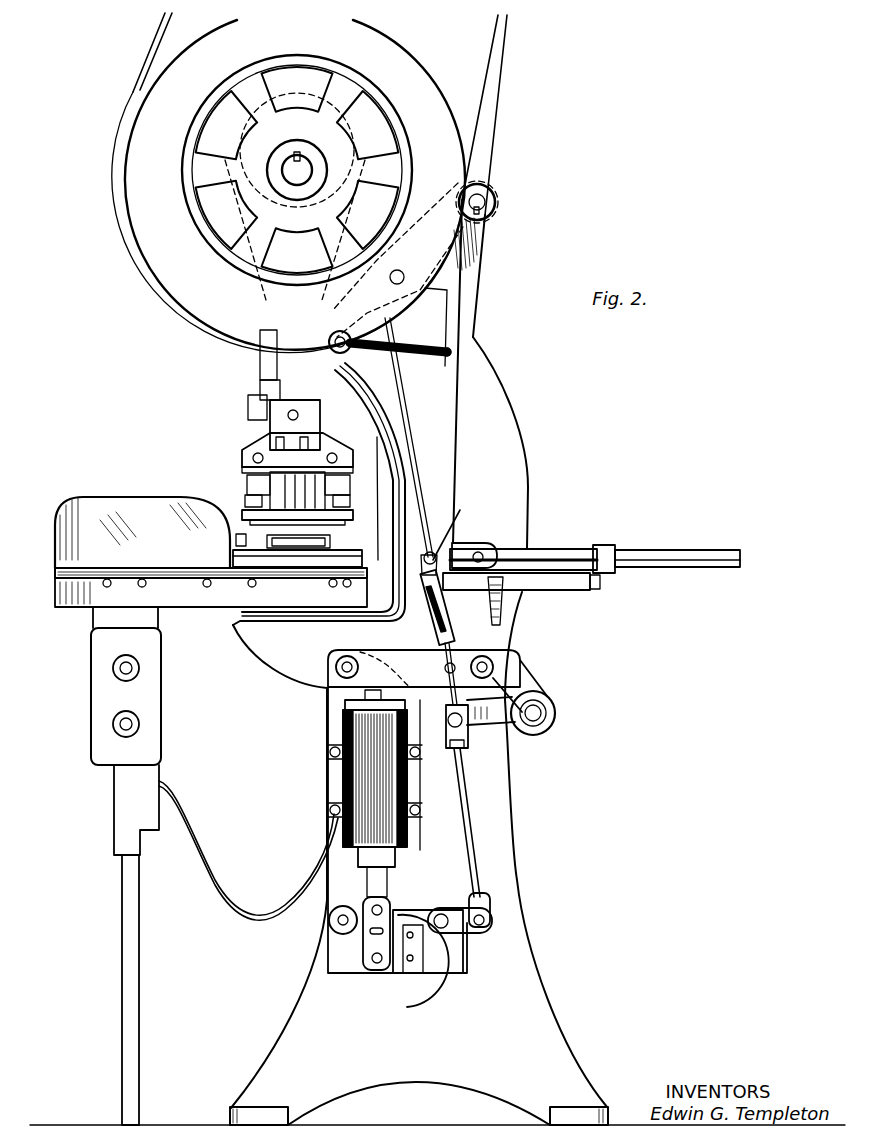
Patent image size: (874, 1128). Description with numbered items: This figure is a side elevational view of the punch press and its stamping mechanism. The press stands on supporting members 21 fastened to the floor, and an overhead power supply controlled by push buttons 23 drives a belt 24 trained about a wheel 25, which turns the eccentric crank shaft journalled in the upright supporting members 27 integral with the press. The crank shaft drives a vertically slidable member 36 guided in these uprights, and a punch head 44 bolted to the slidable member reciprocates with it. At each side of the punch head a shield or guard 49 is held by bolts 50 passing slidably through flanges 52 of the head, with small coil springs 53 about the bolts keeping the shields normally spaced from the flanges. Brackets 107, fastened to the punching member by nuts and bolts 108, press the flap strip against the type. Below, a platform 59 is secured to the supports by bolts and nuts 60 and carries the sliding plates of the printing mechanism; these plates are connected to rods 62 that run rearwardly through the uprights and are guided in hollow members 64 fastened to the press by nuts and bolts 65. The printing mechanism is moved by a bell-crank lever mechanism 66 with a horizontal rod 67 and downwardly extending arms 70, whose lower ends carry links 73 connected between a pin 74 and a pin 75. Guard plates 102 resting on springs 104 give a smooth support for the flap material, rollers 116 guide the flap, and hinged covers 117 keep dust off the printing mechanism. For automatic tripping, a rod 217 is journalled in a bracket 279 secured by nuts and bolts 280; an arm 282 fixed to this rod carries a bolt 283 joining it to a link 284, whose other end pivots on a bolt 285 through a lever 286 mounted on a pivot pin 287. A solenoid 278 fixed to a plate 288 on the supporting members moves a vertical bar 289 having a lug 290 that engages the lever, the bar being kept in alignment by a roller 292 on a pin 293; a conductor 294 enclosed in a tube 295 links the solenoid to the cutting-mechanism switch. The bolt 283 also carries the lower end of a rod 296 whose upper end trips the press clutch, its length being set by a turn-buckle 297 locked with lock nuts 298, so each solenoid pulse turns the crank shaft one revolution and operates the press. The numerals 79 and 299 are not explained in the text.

The supporting members 21 is at (510, 800).
The push buttons 23 is at (112, 722).
The belt 24 is at (494, 76).
The wheel 25 is at (420, 62).
The upright supporting members 27 is at (490, 370).
The vertically slidable member 36 is at (258, 372).
The punch head 44 is at (243, 455).
The shield or guard 49 is at (243, 515).
The bolts 50 is at (243, 470).
The flanges 52 is at (258, 486).
The coil springs 53 is at (250, 500).
The platform 59 is at (64, 605).
The bolts and nuts 60 is at (343, 583).
The rods 62 is at (529, 555).
The hollow members 64 is at (677, 543).
The nuts and bolts 65 is at (506, 606).
The bell-crank lever mechanism 66 is at (484, 186).
The horizontal rod 67 is at (480, 201).
The downwardly extending arms 70 is at (486, 258).
The links 73 is at (475, 543).
The pin 74 is at (460, 520).
The pin 75 is at (483, 555).
The clutch rod 79 is at (410, 347).
The guard plates 102 is at (236, 538).
The springs 104 is at (234, 556).
The brackets 107 is at (248, 410).
The nuts and bolts 108 is at (288, 413).
The rollers 116 is at (322, 537).
The covers 117 is at (97, 496).
The rod 217 is at (556, 708).
The solenoid 278 is at (343, 771).
The bracket 279 is at (506, 680).
The nuts and bolts 280 is at (494, 664).
The arm 282 is at (508, 727).
The bolt 283 is at (450, 725).
The link 284 is at (478, 838).
The bolt 285 is at (486, 920).
The lever 286 is at (414, 912).
The pivot pin 287 is at (455, 942).
The plate 288 is at (340, 974).
The rod or bar 289 is at (362, 948).
The lug 290 is at (395, 975).
The roller 292 is at (330, 924).
The pin 293 is at (343, 915).
The electrical conductor 294 is at (258, 916).
The tube 295 is at (122, 940).
The rod 296 is at (413, 437).
The turn-buckle 297 is at (449, 625).
The lock nuts 298 is at (427, 578).
The pin 299 is at (453, 664).